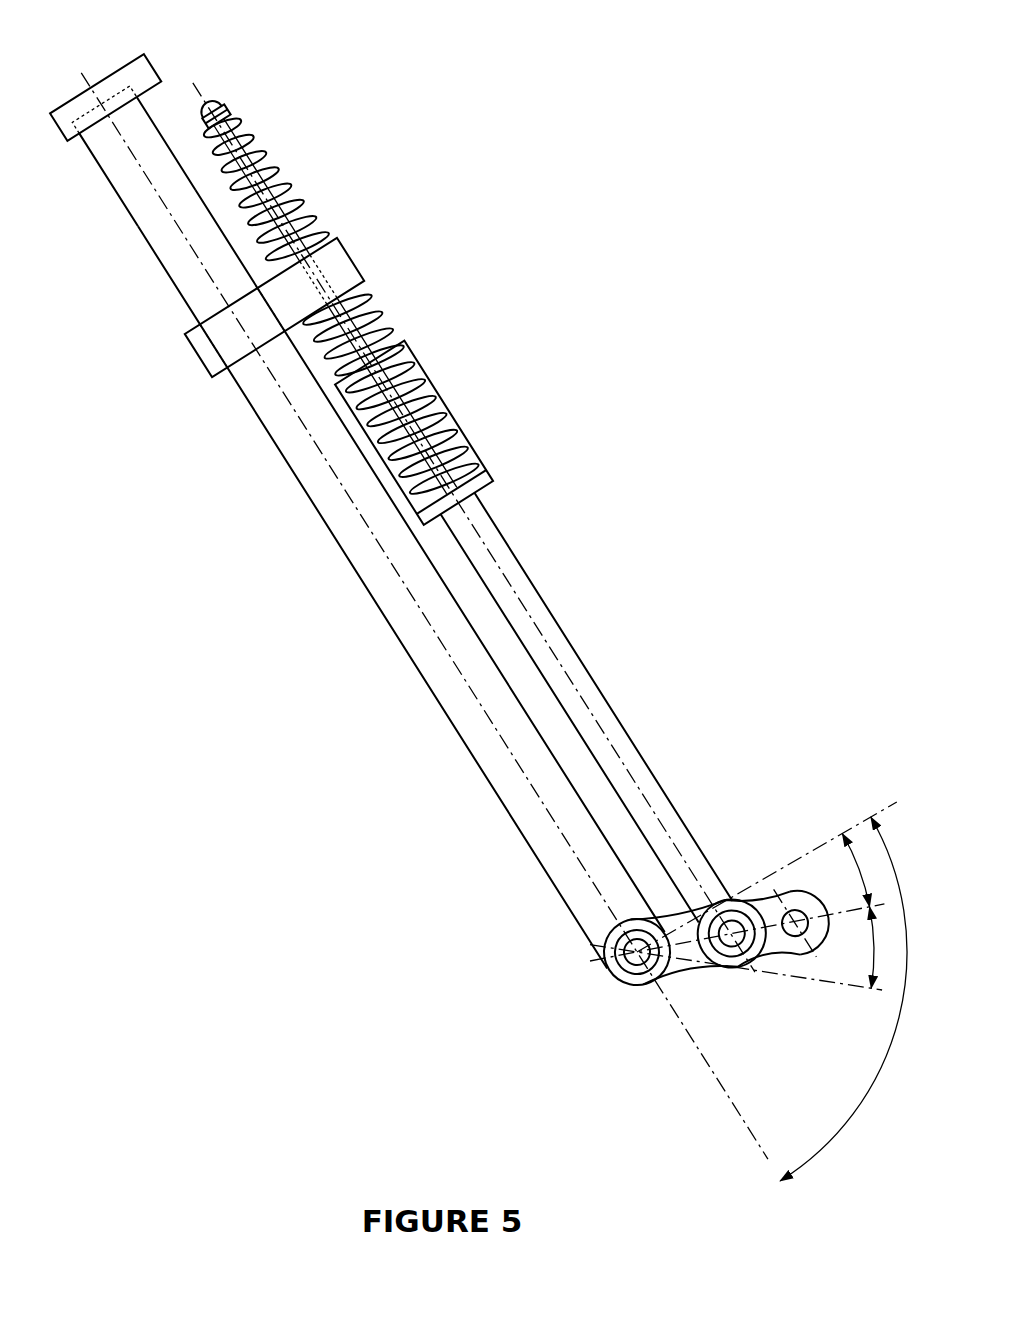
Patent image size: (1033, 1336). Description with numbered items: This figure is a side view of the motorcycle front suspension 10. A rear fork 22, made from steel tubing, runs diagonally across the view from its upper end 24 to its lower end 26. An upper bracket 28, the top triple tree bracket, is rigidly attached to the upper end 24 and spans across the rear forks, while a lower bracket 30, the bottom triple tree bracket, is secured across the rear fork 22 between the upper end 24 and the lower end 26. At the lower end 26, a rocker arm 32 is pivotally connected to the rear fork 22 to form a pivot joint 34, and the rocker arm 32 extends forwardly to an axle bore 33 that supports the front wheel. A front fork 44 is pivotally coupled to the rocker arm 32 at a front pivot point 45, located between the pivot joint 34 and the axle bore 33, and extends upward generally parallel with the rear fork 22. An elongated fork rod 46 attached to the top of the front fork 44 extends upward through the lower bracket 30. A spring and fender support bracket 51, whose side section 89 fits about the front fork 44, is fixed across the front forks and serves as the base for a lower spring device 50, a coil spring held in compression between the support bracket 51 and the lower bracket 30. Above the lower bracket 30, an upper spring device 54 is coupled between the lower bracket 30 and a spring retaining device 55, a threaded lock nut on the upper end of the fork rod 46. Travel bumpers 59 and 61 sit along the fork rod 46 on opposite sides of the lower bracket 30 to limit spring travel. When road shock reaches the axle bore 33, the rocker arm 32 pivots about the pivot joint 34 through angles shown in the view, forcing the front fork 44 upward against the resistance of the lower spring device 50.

The motorcycle front suspension 10 is at (636, 157).
The rear fork 22 is at (372, 598).
The upper end of rear fork 24 is at (84, 150).
The lower end of rear fork 26 is at (588, 945).
The upper bracket 28 is at (157, 67).
The lower bracket 30 is at (362, 260).
The rocker arm 32 is at (813, 958).
The axle bore 33 is at (792, 940).
The pivot joint 34 is at (634, 968).
The front fork 44 is at (571, 640).
The front pivot point 45 is at (728, 953).
The fork rod 46 is at (279, 200).
The lower spring device 50 is at (387, 322).
The spring and fender support bracket 51 is at (422, 368).
The upper spring device 54 is at (318, 210).
The spring retaining device 55 is at (222, 108).
The travel bumper 59 is at (266, 157).
The travel bumper 61 is at (427, 410).
The side section 89 is at (488, 482).